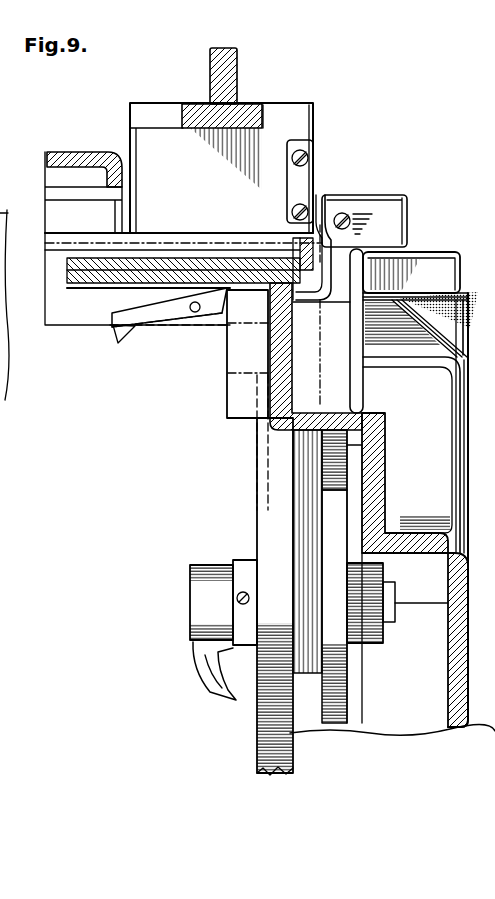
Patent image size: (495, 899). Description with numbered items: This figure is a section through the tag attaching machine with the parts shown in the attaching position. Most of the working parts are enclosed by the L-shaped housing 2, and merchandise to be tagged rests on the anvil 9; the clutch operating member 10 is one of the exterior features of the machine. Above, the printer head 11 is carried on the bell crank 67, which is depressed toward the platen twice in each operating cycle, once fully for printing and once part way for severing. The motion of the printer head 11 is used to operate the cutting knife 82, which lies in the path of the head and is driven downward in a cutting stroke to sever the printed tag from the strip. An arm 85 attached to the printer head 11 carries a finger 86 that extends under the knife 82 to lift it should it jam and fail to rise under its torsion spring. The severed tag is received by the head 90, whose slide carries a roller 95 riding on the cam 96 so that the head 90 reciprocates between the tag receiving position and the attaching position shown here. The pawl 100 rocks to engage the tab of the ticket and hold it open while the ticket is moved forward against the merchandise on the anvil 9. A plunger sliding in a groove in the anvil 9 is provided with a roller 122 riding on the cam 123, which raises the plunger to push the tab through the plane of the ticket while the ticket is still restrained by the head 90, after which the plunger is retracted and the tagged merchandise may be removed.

The housing 2 is at (95, 152).
The anvil 9 is at (452, 348).
The clutch operating member 10 is at (363, 350).
The printer head 11 is at (221, 168).
The bell crank 67 is at (215, 62).
The cutting knife 82 is at (292, 243).
The arm 85 is at (313, 189).
The finger 86 is at (307, 287).
The head 90 is at (386, 205).
The roller 95 is at (300, 440).
The cam 96 is at (280, 520).
The pawl 100 is at (208, 315).
The roller 122 is at (343, 460).
The cam 123 is at (333, 705).